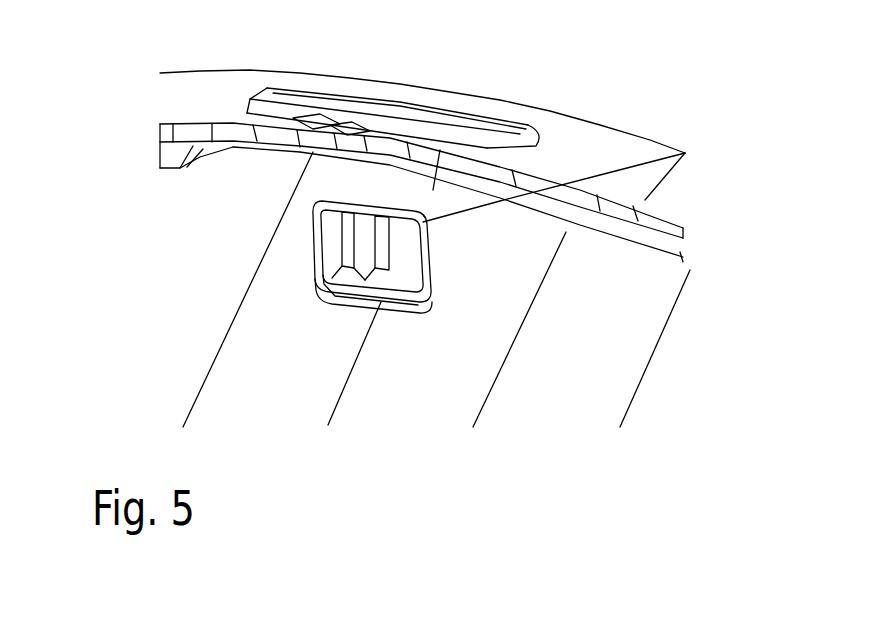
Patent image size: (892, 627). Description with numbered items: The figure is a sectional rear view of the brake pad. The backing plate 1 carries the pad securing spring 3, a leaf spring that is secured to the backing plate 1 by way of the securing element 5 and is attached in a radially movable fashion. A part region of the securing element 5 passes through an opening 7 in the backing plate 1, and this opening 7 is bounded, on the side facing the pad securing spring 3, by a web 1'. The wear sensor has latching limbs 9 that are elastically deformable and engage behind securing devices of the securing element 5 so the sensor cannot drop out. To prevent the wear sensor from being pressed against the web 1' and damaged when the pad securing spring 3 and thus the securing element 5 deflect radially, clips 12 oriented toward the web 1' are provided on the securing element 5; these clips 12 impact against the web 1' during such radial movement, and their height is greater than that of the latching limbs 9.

The backing plate 1 is at (436, 338).
The web 1' is at (465, 192).
The pad securing spring 3 is at (215, 100).
The securing element 5 is at (413, 126).
The opening 7 is at (330, 293).
The latching limbs 9 is at (381, 217).
The clips 12 is at (322, 247).